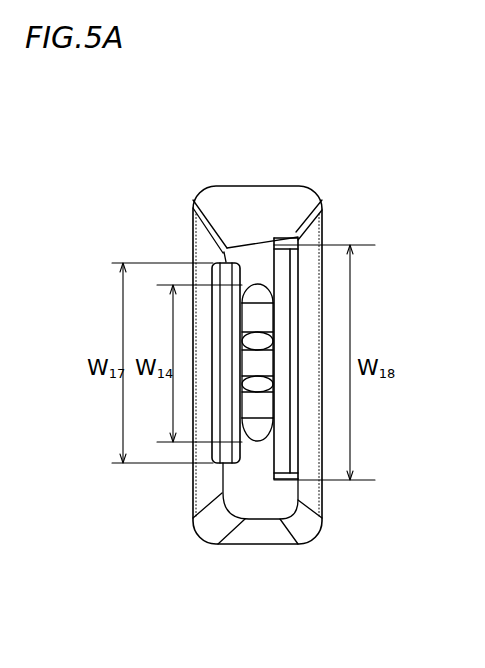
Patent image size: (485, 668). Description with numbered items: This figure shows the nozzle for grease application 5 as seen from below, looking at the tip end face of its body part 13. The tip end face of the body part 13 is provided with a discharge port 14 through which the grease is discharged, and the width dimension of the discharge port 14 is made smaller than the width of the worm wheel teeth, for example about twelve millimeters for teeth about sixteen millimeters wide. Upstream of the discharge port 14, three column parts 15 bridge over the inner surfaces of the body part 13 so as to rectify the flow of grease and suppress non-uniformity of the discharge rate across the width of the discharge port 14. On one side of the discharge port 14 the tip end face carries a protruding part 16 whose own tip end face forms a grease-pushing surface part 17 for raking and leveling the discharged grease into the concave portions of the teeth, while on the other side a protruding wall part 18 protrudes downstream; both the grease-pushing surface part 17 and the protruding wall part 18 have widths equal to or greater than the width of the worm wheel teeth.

The nozzle for grease application 5 is at (322, 535).
The body part 13 is at (210, 537).
The discharge port 14 is at (284, 262).
The column parts 15 is at (255, 413).
The protruding part 16 is at (222, 491).
The grease-pushing surface part 17 is at (226, 262).
The protruding wall part 18 is at (278, 256).